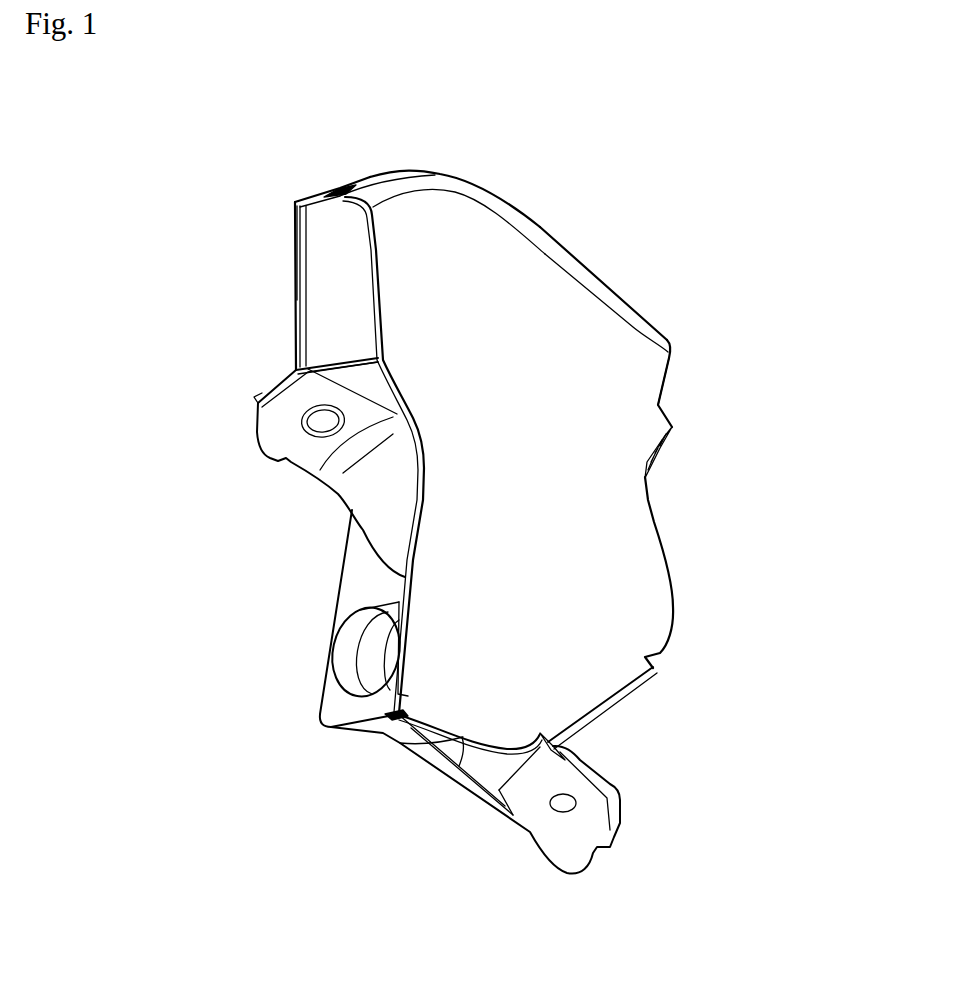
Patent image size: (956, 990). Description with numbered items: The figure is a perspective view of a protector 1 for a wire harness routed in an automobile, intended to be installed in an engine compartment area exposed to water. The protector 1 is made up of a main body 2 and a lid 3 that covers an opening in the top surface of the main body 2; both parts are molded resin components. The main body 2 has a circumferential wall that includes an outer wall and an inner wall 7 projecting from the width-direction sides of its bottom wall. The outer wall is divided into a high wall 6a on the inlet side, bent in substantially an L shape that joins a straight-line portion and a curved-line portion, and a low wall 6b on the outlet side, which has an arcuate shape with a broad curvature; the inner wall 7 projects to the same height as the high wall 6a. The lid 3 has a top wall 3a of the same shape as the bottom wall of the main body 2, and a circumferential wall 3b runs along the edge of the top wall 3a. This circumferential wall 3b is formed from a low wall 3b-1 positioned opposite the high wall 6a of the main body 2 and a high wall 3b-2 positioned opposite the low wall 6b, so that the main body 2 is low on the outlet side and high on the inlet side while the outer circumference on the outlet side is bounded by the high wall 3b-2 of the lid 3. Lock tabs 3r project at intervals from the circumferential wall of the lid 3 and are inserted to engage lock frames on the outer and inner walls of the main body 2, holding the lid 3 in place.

The protector 1 is at (185, 274).
The main body 2 is at (295, 328).
The lid 3 is at (656, 522).
The top wall 3a is at (577, 414).
The circumferential wall 3b is at (567, 263).
The low wall 3b-1 is at (459, 766).
The high wall 3b-2 is at (460, 187).
The lock tabs 3r is at (330, 190).
The high wall 6a is at (326, 729).
The low wall 6b is at (325, 193).
The inner wall 7 is at (321, 470).